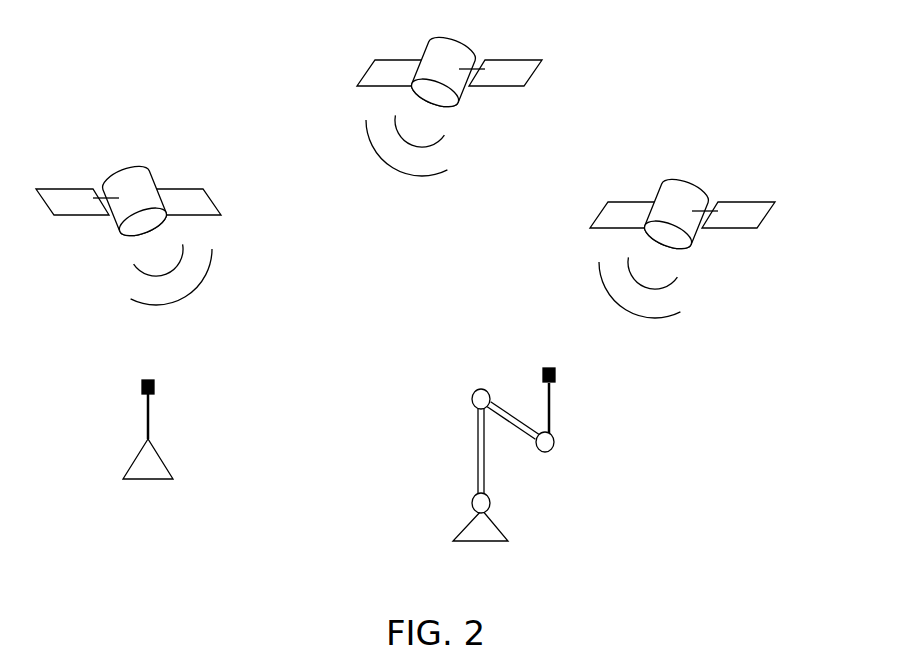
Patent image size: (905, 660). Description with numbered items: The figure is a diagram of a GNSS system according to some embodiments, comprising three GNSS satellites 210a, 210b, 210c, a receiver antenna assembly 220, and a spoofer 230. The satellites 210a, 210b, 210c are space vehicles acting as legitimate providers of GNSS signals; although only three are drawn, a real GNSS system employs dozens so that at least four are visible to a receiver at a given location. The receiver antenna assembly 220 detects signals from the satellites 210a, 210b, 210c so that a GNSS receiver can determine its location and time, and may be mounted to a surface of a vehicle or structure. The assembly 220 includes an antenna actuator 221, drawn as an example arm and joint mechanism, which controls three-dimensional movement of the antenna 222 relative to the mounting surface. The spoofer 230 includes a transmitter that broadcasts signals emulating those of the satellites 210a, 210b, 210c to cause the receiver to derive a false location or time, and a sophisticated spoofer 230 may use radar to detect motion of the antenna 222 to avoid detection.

The GNSS satellite 210a is at (185, 187).
The GNSS satellite 210b is at (506, 58).
The GNSS satellite 210c is at (742, 200).
The receiver antenna assembly 220 is at (447, 507).
The antenna actuator 221 is at (468, 393).
The antenna 222 is at (556, 393).
The spoofer 230 is at (160, 456).